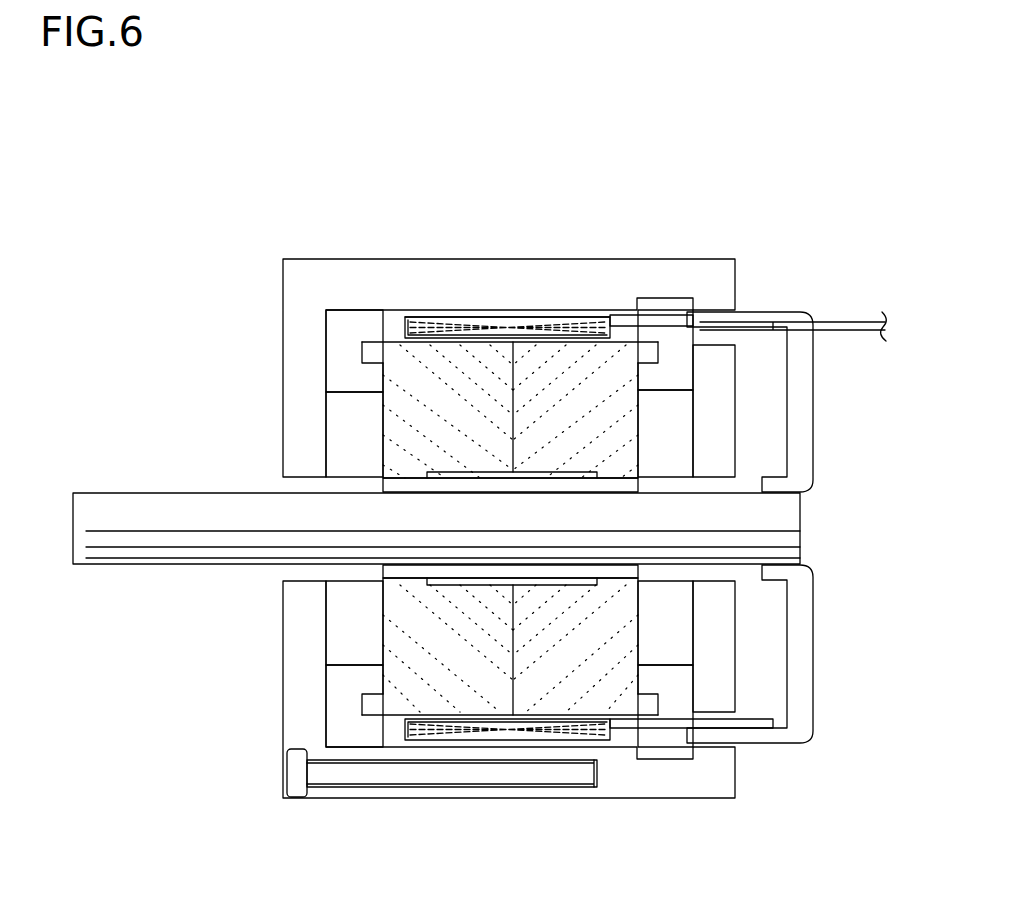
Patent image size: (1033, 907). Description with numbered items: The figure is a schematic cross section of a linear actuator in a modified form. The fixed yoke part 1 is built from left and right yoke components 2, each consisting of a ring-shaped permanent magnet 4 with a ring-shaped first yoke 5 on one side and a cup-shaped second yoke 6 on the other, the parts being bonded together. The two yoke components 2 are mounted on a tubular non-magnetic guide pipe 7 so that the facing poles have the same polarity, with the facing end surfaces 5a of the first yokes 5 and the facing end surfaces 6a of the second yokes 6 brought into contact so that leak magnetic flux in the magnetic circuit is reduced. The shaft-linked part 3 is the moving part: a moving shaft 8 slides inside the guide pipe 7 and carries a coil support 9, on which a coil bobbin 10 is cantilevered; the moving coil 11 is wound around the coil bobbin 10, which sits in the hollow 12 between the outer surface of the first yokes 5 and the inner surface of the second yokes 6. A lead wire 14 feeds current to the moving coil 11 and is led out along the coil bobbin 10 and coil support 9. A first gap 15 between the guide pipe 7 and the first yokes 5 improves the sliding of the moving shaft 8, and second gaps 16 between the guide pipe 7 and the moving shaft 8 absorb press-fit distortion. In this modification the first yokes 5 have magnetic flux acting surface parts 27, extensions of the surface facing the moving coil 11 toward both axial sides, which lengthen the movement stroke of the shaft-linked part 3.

The yoke part 1 is at (504, 128).
The yoke component 2 is at (397, 117).
The shaft-linked part 3 is at (877, 450).
The permanent magnet 4 is at (345, 400).
The first yoke 5 is at (398, 358).
The end surface of first yoke 5a is at (518, 367).
The second yoke 6 is at (313, 270).
The end surface of second yoke 6a is at (513, 290).
The guide pipe 7 is at (387, 487).
The moving shaft 8 is at (788, 508).
The coil support 9 is at (800, 450).
The coil bobbin 10 is at (407, 317).
The moving coil 11 is at (557, 318).
The hollow 12 is at (335, 368).
The lead wire 14 is at (838, 327).
The first gap 15 is at (585, 473).
The second gap 16 is at (385, 563).
The magnetic flux acting surface part 27 is at (372, 345).